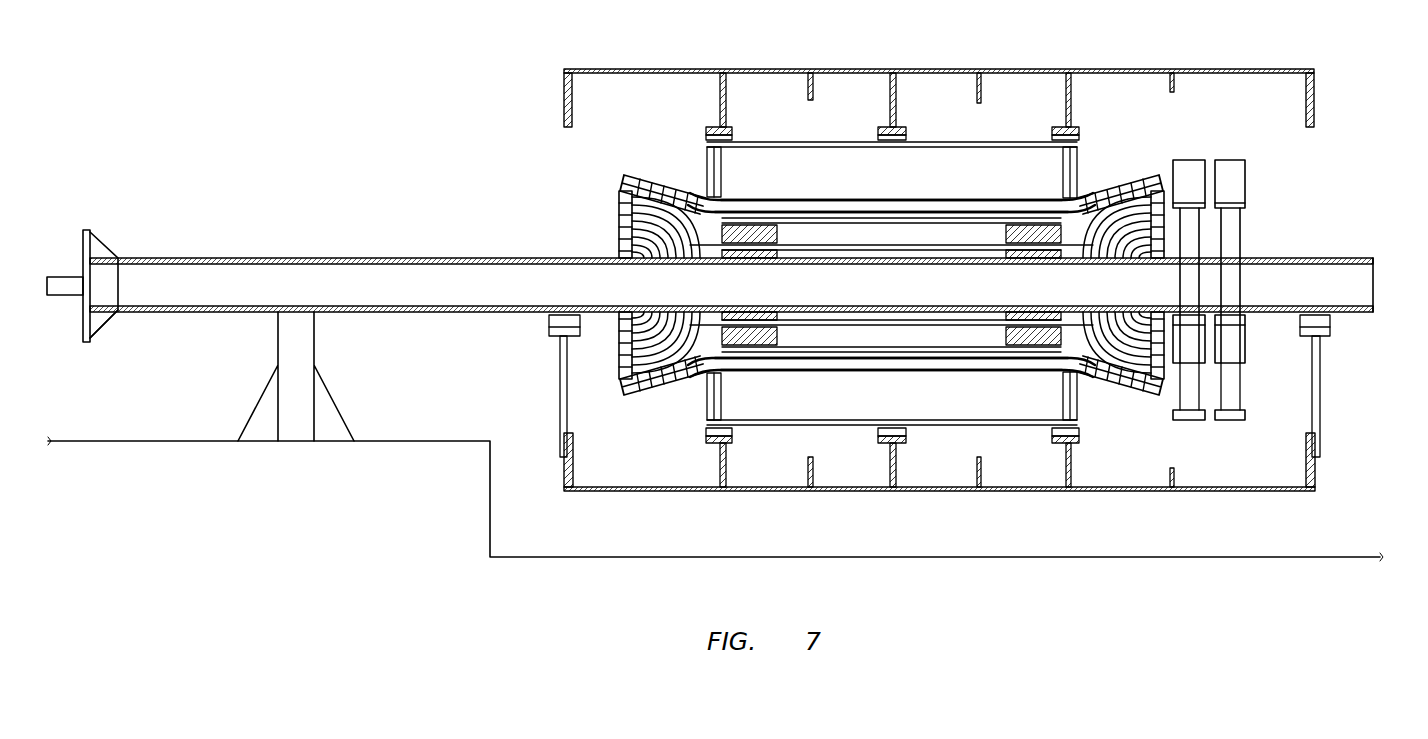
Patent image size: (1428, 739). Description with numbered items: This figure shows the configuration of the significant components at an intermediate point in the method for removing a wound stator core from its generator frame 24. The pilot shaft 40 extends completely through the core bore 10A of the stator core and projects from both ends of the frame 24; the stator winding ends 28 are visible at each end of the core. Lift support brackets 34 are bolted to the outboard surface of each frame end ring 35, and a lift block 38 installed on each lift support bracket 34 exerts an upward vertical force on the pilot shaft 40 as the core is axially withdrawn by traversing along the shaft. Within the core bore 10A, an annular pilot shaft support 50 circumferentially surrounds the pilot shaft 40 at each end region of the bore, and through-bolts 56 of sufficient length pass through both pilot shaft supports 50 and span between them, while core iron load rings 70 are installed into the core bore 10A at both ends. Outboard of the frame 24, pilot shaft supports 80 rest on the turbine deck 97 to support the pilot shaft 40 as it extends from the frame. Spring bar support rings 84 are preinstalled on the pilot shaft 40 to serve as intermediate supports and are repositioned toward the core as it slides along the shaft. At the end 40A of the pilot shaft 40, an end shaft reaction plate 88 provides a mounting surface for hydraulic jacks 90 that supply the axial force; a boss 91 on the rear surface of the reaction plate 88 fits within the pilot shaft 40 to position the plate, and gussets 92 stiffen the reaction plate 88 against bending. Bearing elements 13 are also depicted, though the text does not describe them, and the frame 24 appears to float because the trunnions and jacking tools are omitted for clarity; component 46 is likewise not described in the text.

The core bore 10A is at (866, 96).
The bearing 13 is at (735, 126).
The generator frame 24 is at (1232, 72).
The winding ends 28 is at (625, 190).
The lift support brackets 34 is at (939, 386).
The frame end rings 35 is at (563, 95).
The lift block 38 is at (553, 338).
The pilot shaft 40 is at (322, 257).
The end of the pilot shaft 40A is at (710, 285).
The support block 46 is at (549, 322).
The annular pilot shaft support 50 is at (752, 254).
The through-bolts 56 is at (865, 250).
The core iron load rings 70 is at (757, 233).
The pilot shaft supports 80 is at (278, 348).
The spring bar support rings 84 is at (1232, 160).
The end shaft reaction plate 88 is at (85, 345).
The hydraulic jacks 90 is at (68, 277).
The boss 91 is at (103, 292).
The gussets 92 is at (100, 328).
The turbine deck 97 is at (400, 440).